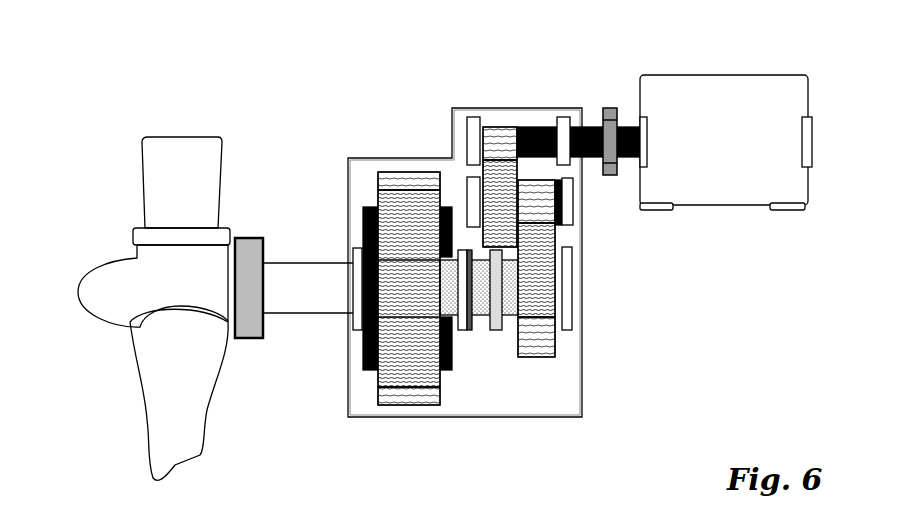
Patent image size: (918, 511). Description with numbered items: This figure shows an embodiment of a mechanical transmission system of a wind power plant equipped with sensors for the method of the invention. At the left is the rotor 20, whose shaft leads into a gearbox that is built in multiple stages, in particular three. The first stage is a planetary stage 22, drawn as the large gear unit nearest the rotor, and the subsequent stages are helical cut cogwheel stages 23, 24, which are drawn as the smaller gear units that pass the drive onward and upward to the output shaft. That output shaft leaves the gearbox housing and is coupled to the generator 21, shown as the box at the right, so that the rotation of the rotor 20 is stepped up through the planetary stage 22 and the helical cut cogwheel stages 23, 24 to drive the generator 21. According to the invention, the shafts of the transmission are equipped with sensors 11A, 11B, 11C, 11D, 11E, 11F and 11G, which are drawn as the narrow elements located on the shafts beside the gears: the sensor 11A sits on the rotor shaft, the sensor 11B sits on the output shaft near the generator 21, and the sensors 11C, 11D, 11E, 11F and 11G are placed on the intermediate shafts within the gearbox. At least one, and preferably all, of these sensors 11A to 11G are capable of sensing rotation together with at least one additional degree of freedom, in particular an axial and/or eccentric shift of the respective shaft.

The rotor 20 is at (120, 280).
The sensor 11A is at (248, 323).
The planetary stage 22 is at (397, 172).
The sensor 11F is at (472, 193).
The sensor 11G is at (472, 133).
The helical cut cogwheel stage 24 is at (502, 158).
The sensor 11B is at (567, 120).
The generator 21 is at (687, 92).
The sensor 11E is at (572, 223).
The helical cut cogwheel stage 23 is at (535, 228).
The sensor 11D is at (568, 327).
The sensor 11C is at (460, 330).